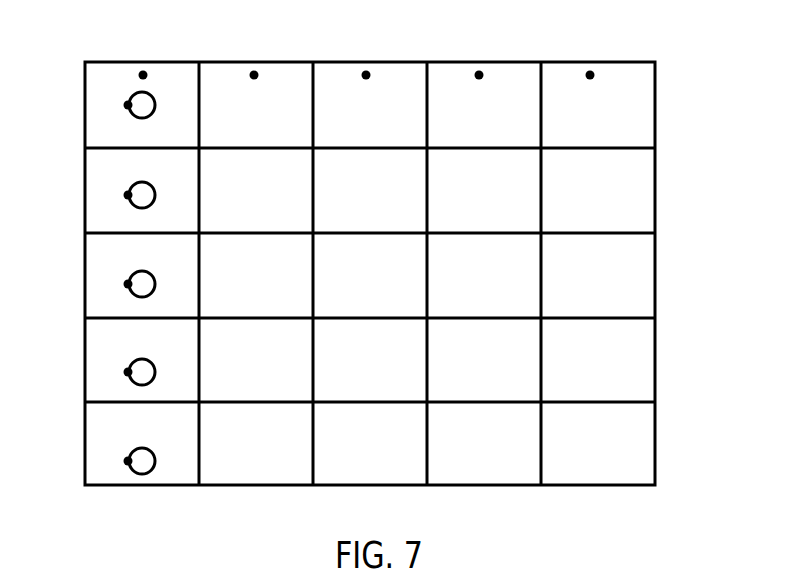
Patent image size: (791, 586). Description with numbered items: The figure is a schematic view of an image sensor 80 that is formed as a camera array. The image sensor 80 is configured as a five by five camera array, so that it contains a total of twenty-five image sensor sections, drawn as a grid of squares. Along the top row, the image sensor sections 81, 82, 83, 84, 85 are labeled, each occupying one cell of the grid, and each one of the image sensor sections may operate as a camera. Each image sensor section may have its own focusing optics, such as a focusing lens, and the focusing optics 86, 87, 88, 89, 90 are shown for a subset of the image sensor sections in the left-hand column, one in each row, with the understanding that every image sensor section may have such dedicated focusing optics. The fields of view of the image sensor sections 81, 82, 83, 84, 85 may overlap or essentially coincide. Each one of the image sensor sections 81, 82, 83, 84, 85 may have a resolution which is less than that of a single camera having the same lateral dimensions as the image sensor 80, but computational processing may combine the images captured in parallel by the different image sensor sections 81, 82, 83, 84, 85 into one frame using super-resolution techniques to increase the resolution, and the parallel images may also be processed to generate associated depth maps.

The image sensor 80 is at (656, 472).
The image sensor section 81 is at (143, 75).
The image sensor section 82 is at (254, 75).
The image sensor section 83 is at (366, 75).
The image sensor section 84 is at (479, 75).
The image sensor section 85 is at (590, 75).
The focusing optics 86 is at (128, 105).
The focusing optics 87 is at (128, 195).
The focusing optics 88 is at (128, 284).
The focusing optics 89 is at (128, 372).
The focusing optics 90 is at (128, 461).